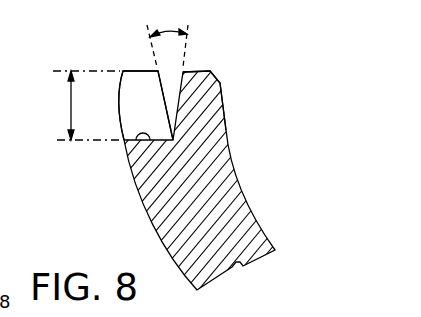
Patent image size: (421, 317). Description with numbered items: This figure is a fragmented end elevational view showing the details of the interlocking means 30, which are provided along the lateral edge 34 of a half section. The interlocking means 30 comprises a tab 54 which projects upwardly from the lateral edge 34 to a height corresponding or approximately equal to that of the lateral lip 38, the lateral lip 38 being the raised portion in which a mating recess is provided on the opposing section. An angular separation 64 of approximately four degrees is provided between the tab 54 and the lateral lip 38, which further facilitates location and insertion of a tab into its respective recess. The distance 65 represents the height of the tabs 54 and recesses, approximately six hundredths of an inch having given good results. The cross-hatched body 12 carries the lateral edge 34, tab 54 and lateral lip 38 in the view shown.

The gear body 12 is at (230, 205).
The interlocking means 30 is at (119, 34).
The lateral edge 34 is at (141, 157).
The lateral lip 38 is at (208, 95).
The tab 54 is at (147, 82).
The angular separation 64 is at (168, 28).
The distance 65 is at (67, 96).